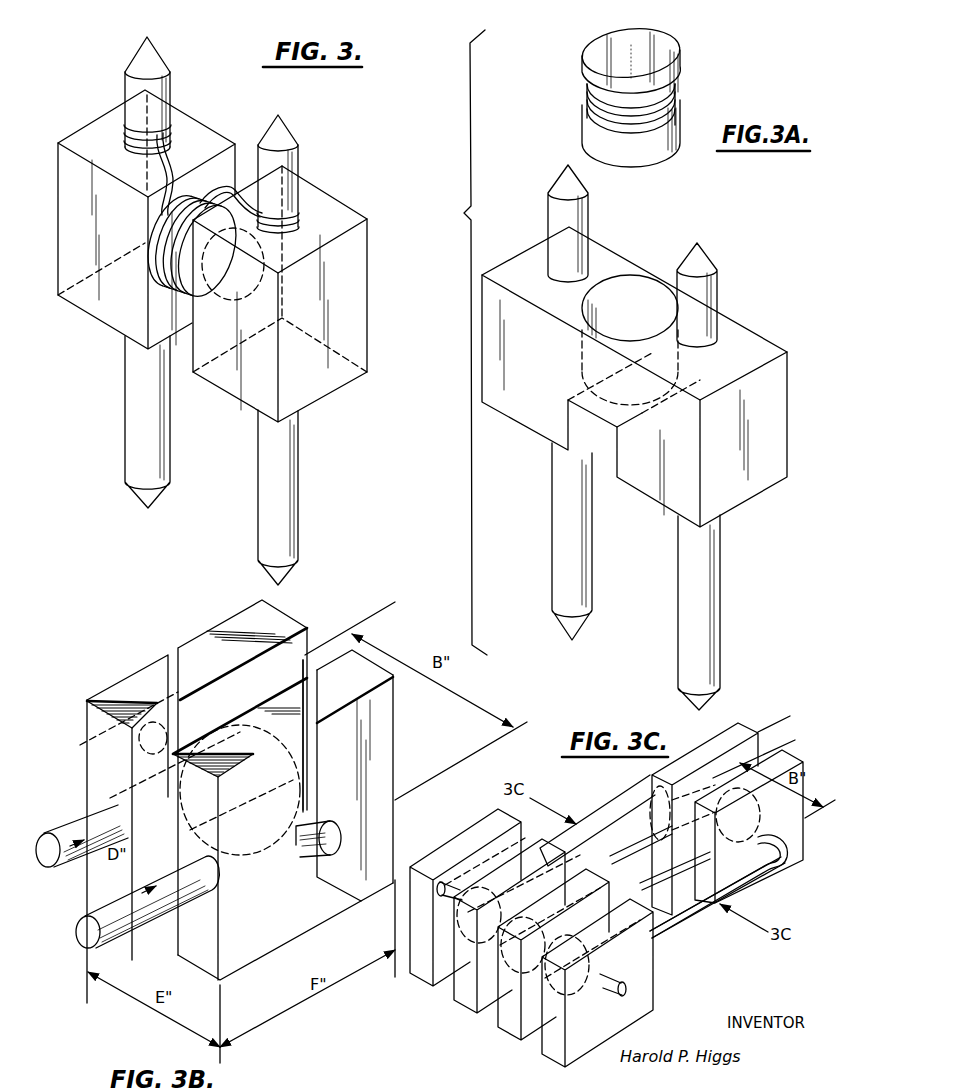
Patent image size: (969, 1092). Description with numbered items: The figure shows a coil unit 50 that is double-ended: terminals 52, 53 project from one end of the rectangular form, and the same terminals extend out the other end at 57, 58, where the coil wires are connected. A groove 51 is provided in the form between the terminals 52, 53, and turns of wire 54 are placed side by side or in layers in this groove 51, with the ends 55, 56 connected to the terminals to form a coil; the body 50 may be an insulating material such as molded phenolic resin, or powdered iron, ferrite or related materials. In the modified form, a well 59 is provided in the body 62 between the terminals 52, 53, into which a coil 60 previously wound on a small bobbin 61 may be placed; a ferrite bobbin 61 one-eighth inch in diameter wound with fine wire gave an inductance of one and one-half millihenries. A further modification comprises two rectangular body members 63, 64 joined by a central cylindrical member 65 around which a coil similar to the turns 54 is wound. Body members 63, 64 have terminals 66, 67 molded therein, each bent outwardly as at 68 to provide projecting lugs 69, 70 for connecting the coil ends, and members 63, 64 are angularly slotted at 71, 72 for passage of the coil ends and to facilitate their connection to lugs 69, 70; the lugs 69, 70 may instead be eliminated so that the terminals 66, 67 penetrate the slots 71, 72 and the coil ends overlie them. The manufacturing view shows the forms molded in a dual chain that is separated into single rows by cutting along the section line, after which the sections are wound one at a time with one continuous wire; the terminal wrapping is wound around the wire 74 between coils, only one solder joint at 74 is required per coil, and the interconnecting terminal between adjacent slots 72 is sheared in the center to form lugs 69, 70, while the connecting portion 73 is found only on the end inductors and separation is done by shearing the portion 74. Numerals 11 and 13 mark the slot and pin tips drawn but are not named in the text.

In FIG. 3A, the slot in block 11 is at (600, 468).
In FIG. 3, the contact pin tip 13 is at (153, 62).
In FIG. 3A, the contact pin tip 13 is at (575, 620).
In FIG. 3, the coil unit 50 is at (340, 368).
In FIG. 3, the groove 51 is at (219, 170).
In FIG. 3, the terminal 52 is at (148, 430).
In FIG. 3A, the terminal 52 is at (563, 565).
In FIG. 3, the terminal 53 is at (280, 455).
In FIG. 3A, the terminal 53 is at (702, 615).
In FIG. 3, the turns of wire 54 is at (165, 247).
In FIG. 3, the wire end 55 is at (162, 146).
In FIG. 3, the wire end 56 is at (293, 212).
In FIG. 3, the terminal extension 57 is at (158, 100).
In FIG. 3A, the terminal extension 57 is at (562, 217).
In FIG. 3, the terminal extension 58 is at (283, 162).
In FIG. 3A, the terminal extension 58 is at (700, 296).
In FIG. 3A, the well 59 is at (638, 300).
In FIG. 3A, the coil 60 is at (668, 117).
In FIG. 3A, the bobbin 61 is at (658, 63).
In FIG. 3A, the body 62 is at (758, 415).
In FIG. 3B, the rectangular body member 63 is at (92, 718).
In FIG. 3C, the rectangular body member 63 is at (558, 1035).
In FIG. 3B, the rectangular body member 64 is at (398, 775).
In FIG. 3C, the rectangular body member 64 is at (515, 1012).
In FIG. 3B, the central cylindrical member 65 is at (242, 726).
In FIG. 3C, the central cylindrical member 65 is at (748, 828).
In FIG. 3B, the terminal 66 is at (85, 830).
In FIG. 3C, the terminal 66 is at (648, 840).
In FIG. 3B, the terminal 67 is at (100, 915).
In FIG. 3C, the terminal 67 is at (658, 890).
In FIG. 3B, the bend 68 is at (307, 792).
In FIG. 3C, the bend 68 is at (728, 868).
In FIG. 3B, the projecting lug 69 is at (322, 846).
In FIG. 3C, the projecting lug 69 is at (806, 823).
In FIG. 3B, the projecting lug 70 is at (135, 748).
In FIG. 3C, the projecting lug 70 is at (622, 992).
In FIG. 3B, the angular slot 71 is at (172, 674).
In FIG. 3B, the angular slot 72 is at (315, 745).
In FIG. 3C, the connecting portion 73 is at (600, 820).
In FIG. 3B, the interconnecting wire portion 74 is at (322, 832).